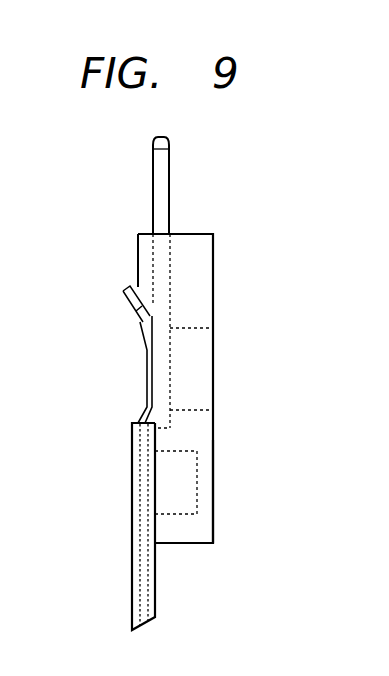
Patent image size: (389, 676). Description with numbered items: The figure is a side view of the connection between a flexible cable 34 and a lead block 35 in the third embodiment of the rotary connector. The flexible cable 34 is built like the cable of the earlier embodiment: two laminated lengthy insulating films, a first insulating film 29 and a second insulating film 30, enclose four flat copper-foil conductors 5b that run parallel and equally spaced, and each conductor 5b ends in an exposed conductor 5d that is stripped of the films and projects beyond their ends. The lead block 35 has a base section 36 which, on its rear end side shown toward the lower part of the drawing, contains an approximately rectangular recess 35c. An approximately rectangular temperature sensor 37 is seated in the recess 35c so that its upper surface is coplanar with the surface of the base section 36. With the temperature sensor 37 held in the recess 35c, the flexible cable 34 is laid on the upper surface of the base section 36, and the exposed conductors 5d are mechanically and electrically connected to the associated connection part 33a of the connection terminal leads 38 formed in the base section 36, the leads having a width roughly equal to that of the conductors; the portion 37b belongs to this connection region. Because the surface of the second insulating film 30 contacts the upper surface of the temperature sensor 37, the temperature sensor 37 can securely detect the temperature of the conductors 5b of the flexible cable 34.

The connection terminal leads 38 is at (171, 161).
The holding portion 37b is at (147, 258).
The exposed conductor 5d is at (148, 372).
The connection part 33a is at (152, 380).
The base section 36 is at (213, 431).
The temperature sensor 37 is at (190, 472).
The lead block 35 is at (214, 491).
The recess 35c is at (197, 512).
The flexible cable 34 is at (133, 538).
The first insulating film 29 is at (132, 597).
The second insulating film 30 is at (155, 563).
The conductor 5b is at (158, 597).